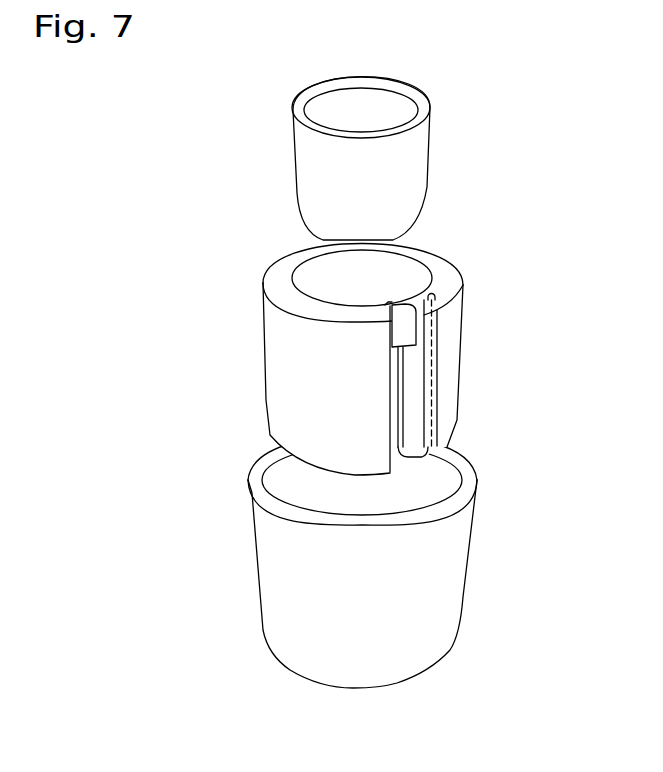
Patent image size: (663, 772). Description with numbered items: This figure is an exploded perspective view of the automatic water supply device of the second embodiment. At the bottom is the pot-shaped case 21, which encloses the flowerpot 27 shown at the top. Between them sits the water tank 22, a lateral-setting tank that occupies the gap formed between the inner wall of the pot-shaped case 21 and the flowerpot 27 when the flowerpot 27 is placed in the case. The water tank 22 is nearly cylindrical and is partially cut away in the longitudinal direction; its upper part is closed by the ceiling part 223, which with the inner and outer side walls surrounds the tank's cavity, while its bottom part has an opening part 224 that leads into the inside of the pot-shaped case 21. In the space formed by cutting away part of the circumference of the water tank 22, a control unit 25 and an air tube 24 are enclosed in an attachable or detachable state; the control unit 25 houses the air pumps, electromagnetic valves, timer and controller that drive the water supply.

The pot-shaped case 21 is at (468, 550).
The water tank 22 is at (343, 352).
The ceiling part 223 is at (282, 265).
The opening part 224 is at (442, 447).
The air tube 24 is at (402, 398).
The control unit 25 is at (404, 336).
The flowerpot 27 is at (427, 143).